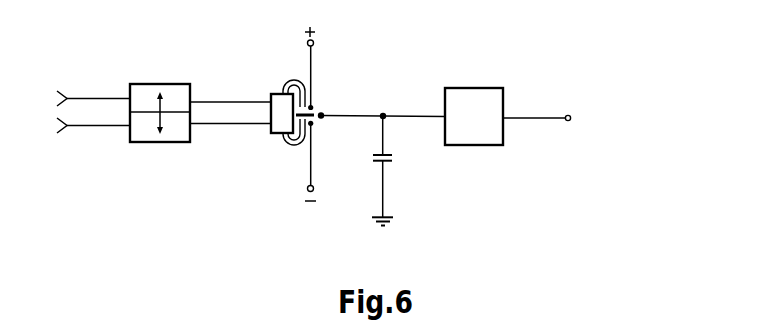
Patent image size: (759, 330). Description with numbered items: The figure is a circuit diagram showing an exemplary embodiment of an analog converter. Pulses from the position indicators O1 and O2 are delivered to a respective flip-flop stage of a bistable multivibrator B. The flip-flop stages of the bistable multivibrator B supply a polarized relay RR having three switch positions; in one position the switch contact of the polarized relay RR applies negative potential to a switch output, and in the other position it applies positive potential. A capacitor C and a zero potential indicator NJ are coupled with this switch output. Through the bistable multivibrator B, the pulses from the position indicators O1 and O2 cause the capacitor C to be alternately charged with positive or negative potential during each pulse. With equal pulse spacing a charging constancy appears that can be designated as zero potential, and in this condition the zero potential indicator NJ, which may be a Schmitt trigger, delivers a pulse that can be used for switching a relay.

The position indicator O1 is at (78, 99).
The position indicator O2 is at (78, 127).
The bistable multivibrator B is at (143, 90).
The polarized relay RR is at (268, 148).
The capacitor C is at (388, 171).
The zero potential indicator NJ is at (520, 156).